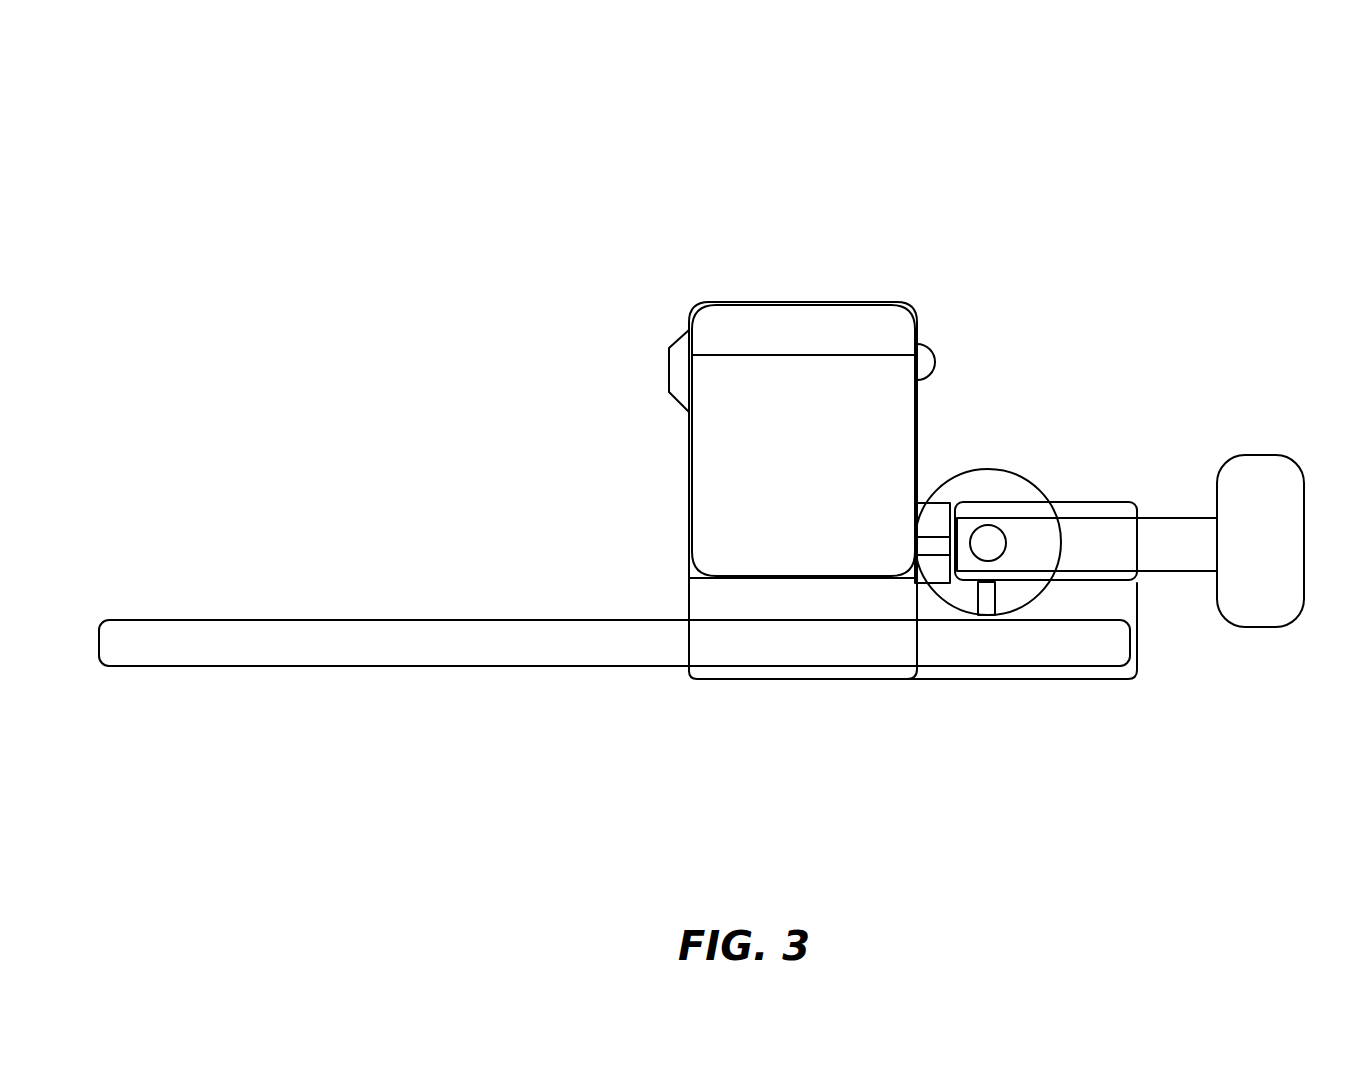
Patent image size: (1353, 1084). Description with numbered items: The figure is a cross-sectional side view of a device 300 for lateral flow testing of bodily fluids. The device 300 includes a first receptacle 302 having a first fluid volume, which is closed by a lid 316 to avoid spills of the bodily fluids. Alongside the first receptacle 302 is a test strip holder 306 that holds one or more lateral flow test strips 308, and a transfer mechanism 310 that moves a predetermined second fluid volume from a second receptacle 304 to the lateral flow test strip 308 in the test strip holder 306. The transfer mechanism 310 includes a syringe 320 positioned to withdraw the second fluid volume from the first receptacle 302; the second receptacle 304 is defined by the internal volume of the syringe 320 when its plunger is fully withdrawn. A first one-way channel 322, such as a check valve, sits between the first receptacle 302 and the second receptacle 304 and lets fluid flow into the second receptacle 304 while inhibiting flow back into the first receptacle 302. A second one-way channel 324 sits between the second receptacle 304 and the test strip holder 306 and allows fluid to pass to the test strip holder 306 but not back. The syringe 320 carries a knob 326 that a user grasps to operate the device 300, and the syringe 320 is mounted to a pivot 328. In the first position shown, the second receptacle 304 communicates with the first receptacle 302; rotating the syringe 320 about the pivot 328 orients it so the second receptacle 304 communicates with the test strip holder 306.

The device 300 is at (462, 108).
The first receptacle 302 is at (689, 452).
The second receptacle 304 is at (990, 510).
The test strip holder 306 is at (930, 680).
The lateral flow test strip 308 is at (465, 668).
The transfer mechanism 310 is at (1150, 448).
The lid 316 is at (802, 303).
The syringe 320 is at (1153, 572).
The first one-way channel 322 is at (925, 545).
The second one-way channel 324 is at (987, 615).
The knob 326 is at (1250, 455).
The pivot 328 is at (1035, 487).